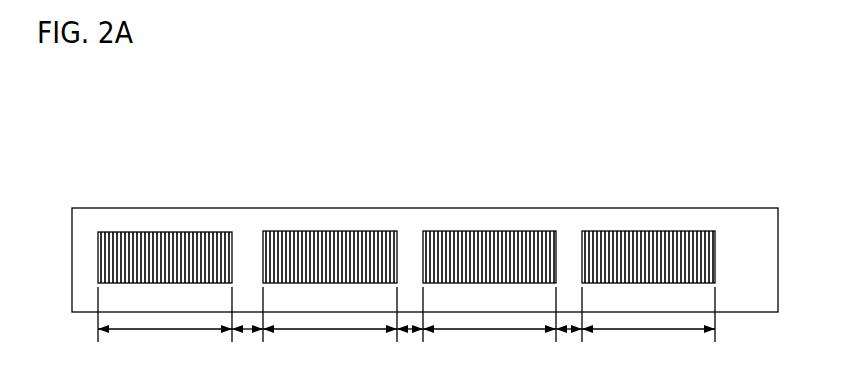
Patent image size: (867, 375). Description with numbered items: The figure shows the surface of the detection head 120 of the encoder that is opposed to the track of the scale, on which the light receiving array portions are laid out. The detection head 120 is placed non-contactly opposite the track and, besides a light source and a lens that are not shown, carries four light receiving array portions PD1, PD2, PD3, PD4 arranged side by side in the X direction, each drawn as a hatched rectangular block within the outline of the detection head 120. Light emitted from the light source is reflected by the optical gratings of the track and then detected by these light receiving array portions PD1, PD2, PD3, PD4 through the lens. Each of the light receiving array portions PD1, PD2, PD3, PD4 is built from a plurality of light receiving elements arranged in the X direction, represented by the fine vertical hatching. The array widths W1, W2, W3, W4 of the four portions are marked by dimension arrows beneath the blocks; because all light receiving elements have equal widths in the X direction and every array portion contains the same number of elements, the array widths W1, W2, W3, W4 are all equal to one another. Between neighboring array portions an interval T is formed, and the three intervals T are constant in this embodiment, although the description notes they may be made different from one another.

The detection head 120 is at (746, 188).
The light receiving array portion PD1 is at (107, 233).
The light receiving array portion PD2 is at (332, 236).
The light receiving array portion PD3 is at (477, 235).
The light receiving array portion PD4 is at (634, 234).
The array width W1 is at (165, 341).
The array width W2 is at (330, 341).
The array width W3 is at (489, 341).
The array width W4 is at (648, 341).
The interval T is at (407, 341).